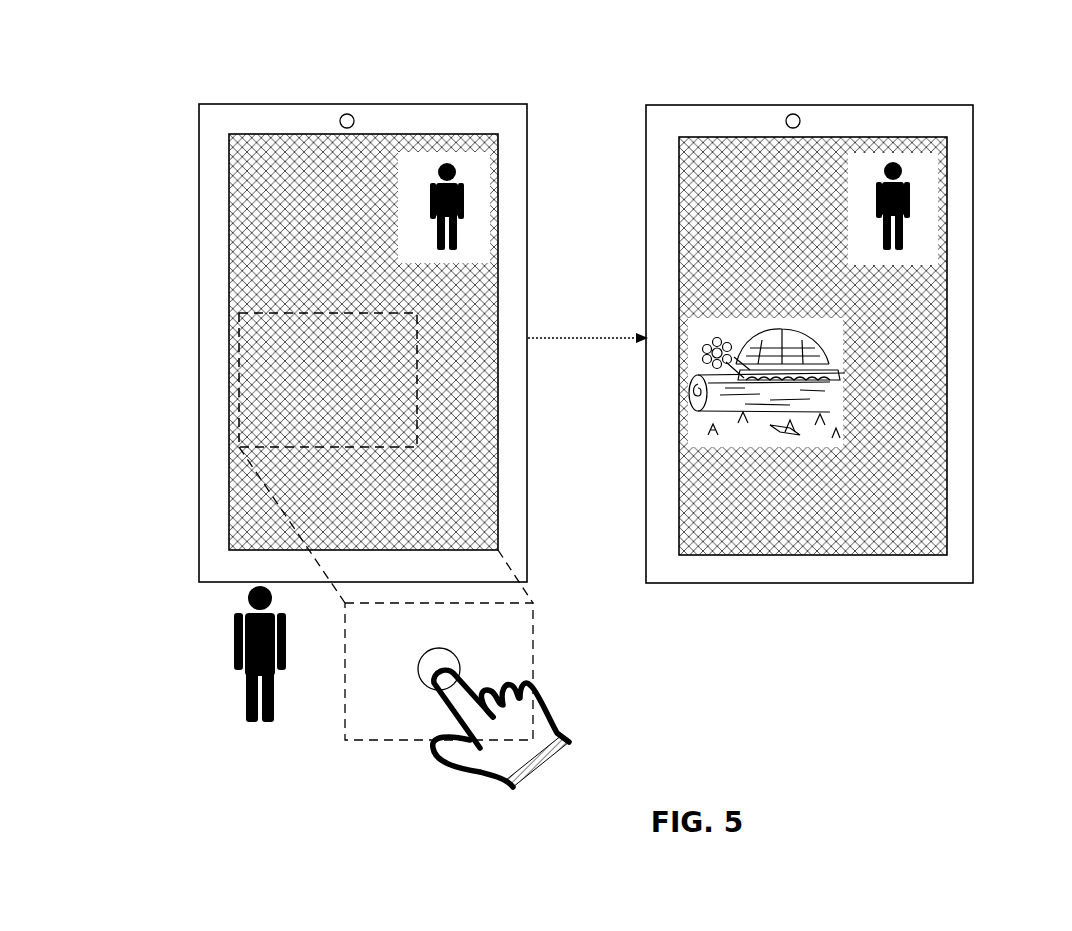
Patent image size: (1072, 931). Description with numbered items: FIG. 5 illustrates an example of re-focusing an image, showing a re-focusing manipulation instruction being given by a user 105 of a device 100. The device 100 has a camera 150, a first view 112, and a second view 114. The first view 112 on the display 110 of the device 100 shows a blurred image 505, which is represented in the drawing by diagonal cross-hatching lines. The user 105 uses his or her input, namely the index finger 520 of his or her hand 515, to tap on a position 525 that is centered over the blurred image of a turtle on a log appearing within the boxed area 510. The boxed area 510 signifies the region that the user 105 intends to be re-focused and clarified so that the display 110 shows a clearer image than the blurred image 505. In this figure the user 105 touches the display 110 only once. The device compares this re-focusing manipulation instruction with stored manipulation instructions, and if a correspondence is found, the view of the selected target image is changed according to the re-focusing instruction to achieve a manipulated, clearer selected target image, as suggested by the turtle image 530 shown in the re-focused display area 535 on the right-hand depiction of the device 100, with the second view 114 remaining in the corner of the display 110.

The device 100 is at (421, 56).
The display 110 is at (262, 133).
The camera 150 is at (341, 113).
The first view 112 is at (460, 320).
The second view 114 is at (490, 208).
The blurred image 505 is at (302, 234).
The boxed area 510 is at (417, 405).
The displayed image 530 is at (855, 362).
The display area 535 is at (915, 457).
The user 105 is at (240, 755).
The hand 515 is at (532, 740).
The index finger 520 is at (452, 687).
The position 525 is at (438, 648).